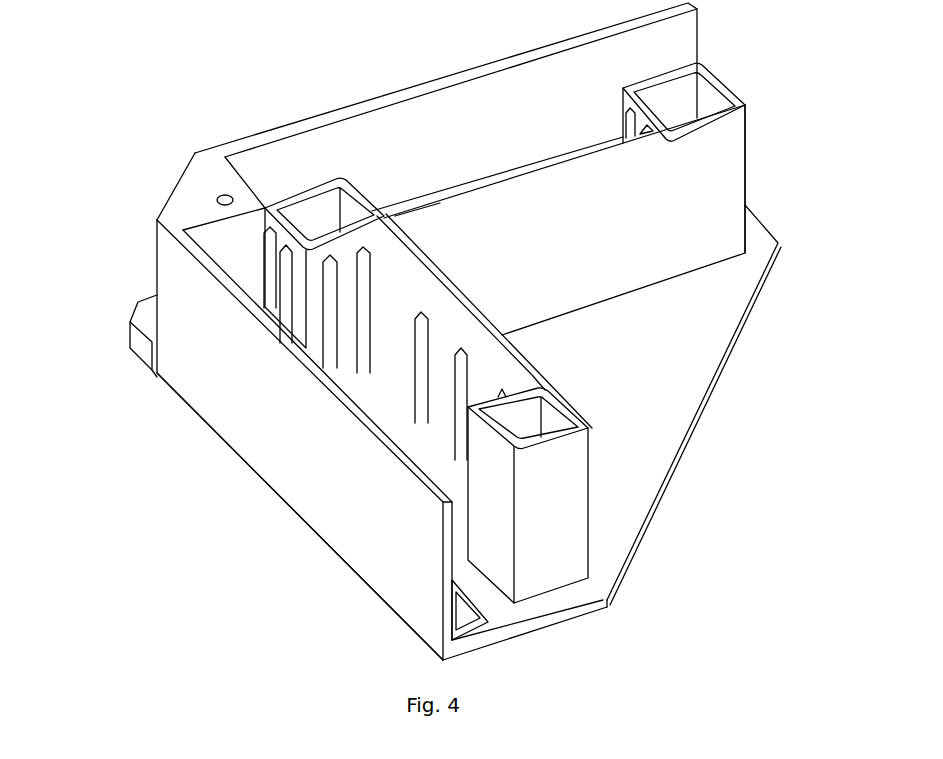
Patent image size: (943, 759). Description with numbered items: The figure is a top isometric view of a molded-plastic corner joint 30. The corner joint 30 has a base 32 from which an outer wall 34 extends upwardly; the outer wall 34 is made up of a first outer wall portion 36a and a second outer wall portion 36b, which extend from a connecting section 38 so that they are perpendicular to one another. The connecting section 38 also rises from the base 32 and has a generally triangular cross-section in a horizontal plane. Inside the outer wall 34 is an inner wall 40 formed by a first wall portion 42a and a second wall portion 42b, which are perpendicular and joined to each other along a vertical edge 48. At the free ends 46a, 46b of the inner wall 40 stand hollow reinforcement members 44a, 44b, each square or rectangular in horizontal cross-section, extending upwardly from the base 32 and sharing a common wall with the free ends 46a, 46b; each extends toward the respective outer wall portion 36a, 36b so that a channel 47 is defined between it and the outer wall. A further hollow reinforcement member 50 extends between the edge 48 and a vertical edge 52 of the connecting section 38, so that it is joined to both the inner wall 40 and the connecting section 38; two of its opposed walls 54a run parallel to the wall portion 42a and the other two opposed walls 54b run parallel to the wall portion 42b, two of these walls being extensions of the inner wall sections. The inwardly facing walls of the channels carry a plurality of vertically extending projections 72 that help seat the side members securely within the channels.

The corner joint 30 is at (693, 442).
The base 32 is at (717, 383).
The outer wall 34 is at (312, 473).
The first outer wall portion 36a is at (373, 560).
The second outer wall portion 36b is at (363, 125).
The connecting section 38 is at (165, 194).
The inner wall 40 is at (558, 266).
The first inner wall portion 42a is at (533, 362).
The second inner wall portion 42b is at (622, 264).
The hollow reinforcement member 44a is at (560, 523).
The hollow reinforcement member 44b is at (720, 84).
The free end of inner wall 46a is at (554, 418).
The free end of inner wall 46b is at (710, 155).
The channel 47 is at (484, 600).
The vertical edge 48 is at (428, 208).
The hollow reinforcement member 50 is at (322, 182).
The vertical edge 52 is at (260, 210).
The opposed walls 54a is at (353, 210).
The opposed walls 54b is at (320, 203).
The vertically extending projections 72 is at (427, 340).